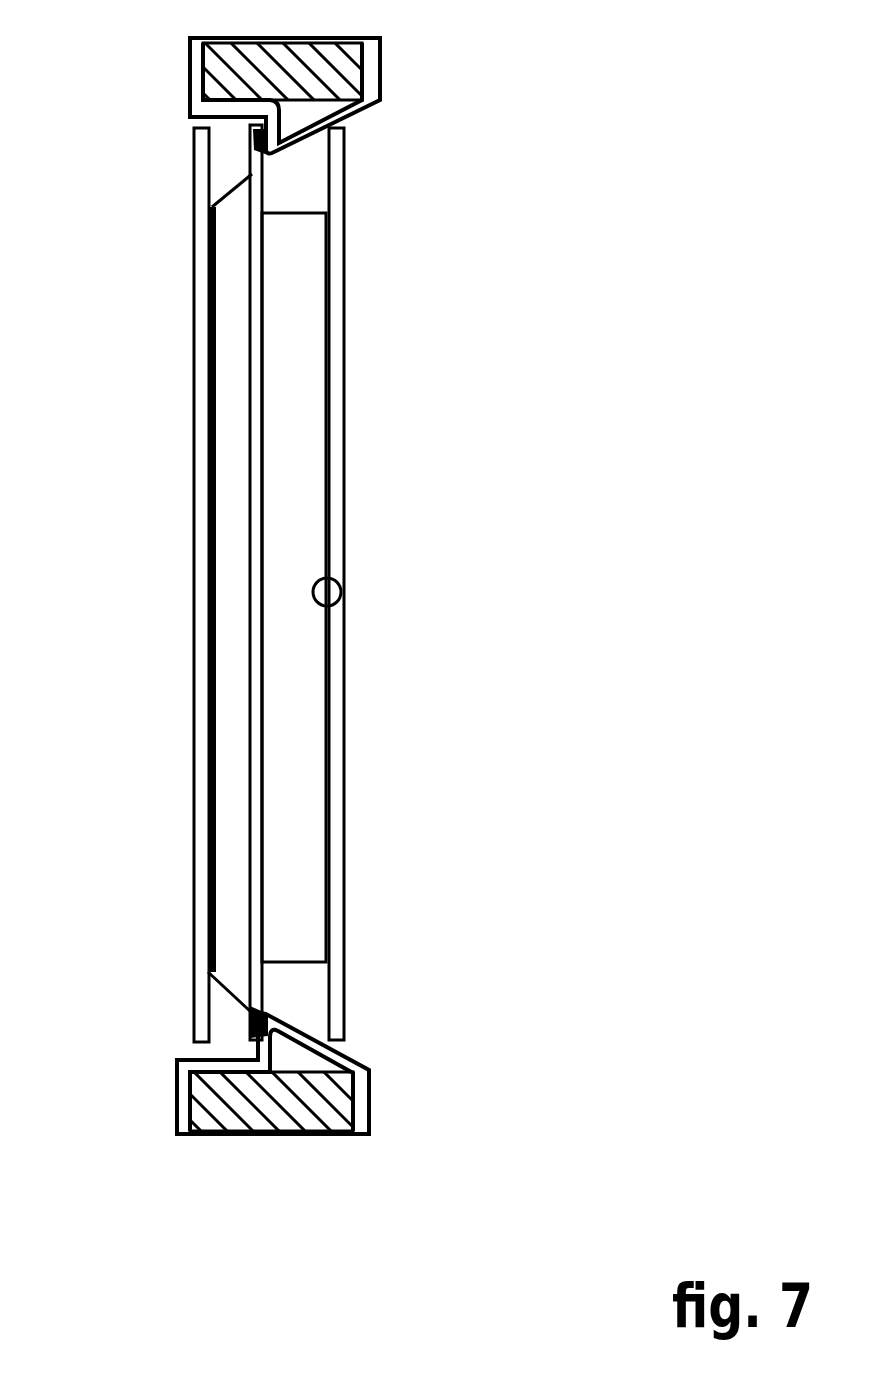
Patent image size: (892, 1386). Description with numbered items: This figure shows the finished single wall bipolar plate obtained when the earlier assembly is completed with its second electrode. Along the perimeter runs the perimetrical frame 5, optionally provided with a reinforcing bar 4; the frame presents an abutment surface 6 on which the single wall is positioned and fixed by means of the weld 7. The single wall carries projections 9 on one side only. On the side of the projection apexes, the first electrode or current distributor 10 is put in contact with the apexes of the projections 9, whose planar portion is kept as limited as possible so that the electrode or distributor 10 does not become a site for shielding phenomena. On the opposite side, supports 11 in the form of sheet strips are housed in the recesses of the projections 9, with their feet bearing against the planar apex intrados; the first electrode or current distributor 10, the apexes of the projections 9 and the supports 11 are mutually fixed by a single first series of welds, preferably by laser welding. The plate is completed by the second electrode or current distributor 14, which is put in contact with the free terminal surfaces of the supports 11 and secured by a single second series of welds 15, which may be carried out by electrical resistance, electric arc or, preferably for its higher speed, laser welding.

The reinforcing bar 4 is at (322, 66).
The perimetrical frame 5 is at (380, 78).
The abutment surface 6 is at (257, 128).
The weld 7 is at (262, 147).
The projections 9 is at (236, 310).
The first electrode or current distributor 10 is at (203, 453).
The supports 11 is at (292, 272).
The second electrode or current distributor 14 is at (335, 367).
The second series of welds 15 is at (347, 580).